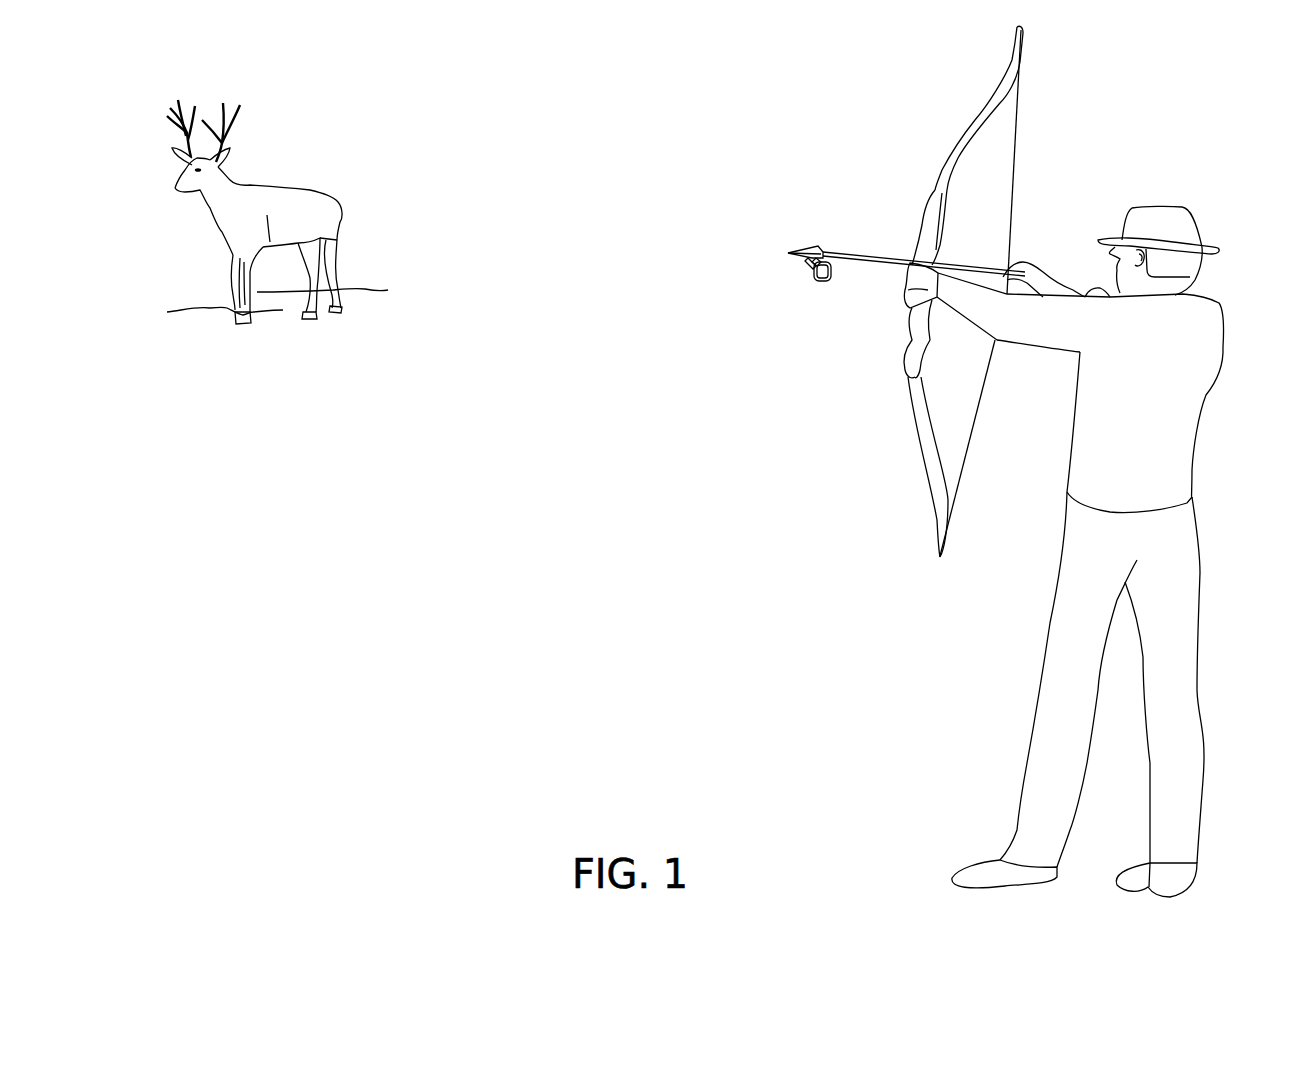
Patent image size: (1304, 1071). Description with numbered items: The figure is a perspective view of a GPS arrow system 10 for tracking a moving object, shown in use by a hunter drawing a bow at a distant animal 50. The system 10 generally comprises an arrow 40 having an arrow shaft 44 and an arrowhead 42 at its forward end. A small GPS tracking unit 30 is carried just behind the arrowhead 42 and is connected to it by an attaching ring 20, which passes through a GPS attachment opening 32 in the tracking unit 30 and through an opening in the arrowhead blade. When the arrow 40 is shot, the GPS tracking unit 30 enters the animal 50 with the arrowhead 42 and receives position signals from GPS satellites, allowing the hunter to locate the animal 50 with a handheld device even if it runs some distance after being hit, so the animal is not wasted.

The GPS arrow system 10 is at (827, 200).
The attaching ring 20 is at (811, 272).
The GPS tracking unit 30 is at (818, 285).
The GPS attachment opening 32 is at (813, 275).
The arrow 40 is at (878, 282).
The arrowhead 42 is at (800, 250).
The arrow shaft 44 is at (875, 253).
The animal 50 is at (212, 219).